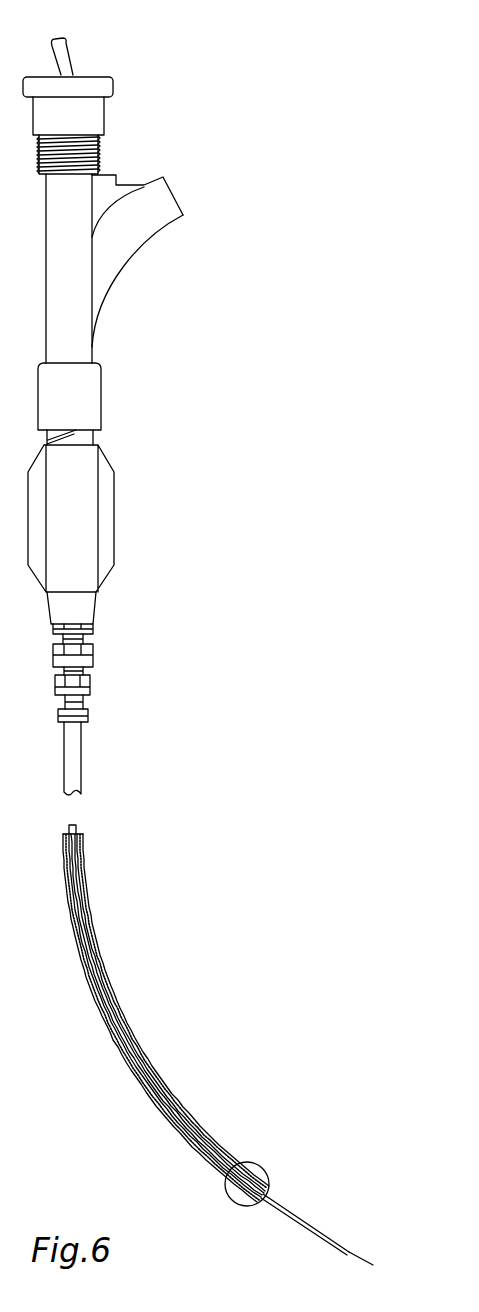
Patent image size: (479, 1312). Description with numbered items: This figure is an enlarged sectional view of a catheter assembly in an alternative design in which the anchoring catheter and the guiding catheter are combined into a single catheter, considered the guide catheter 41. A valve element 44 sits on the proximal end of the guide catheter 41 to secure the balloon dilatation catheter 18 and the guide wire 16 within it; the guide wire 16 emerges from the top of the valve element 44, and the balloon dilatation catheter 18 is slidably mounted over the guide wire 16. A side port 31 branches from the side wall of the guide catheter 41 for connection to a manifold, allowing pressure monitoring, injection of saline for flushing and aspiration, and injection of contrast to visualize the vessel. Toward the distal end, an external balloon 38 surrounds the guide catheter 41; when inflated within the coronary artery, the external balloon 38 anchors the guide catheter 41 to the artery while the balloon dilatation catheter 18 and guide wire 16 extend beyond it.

The guide wire 16 is at (73, 53).
The valve element 44 is at (104, 113).
The side port 31 is at (142, 240).
The guide catheter 41 is at (79, 758).
The external balloon 38 is at (264, 1171).
The balloon dilatation catheter 18 is at (305, 1231).